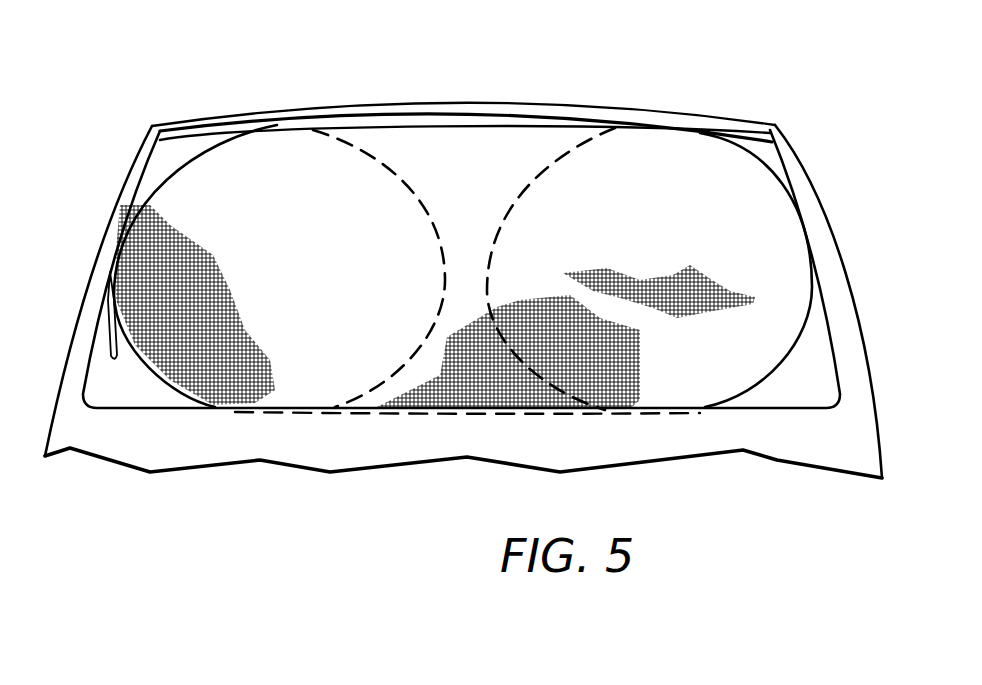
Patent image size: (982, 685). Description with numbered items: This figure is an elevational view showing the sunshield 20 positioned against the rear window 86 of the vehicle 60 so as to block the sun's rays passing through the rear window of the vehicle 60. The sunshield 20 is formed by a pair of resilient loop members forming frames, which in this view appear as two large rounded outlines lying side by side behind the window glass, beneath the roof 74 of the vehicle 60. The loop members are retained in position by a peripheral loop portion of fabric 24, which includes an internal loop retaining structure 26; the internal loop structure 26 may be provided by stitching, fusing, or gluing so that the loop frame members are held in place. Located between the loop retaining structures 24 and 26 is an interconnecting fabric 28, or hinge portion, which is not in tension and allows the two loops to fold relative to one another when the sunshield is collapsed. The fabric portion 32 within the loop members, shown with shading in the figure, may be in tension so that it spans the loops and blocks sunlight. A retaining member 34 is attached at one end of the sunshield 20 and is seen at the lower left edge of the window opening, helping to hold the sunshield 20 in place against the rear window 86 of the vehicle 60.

The sunshield 20 is at (612, 196).
The peripheral loop portion of fabric 24 is at (173, 156).
The internal loop retaining structure 26 is at (400, 165).
The interconnecting fabric 28 is at (498, 155).
The fabric portion 32 is at (706, 296).
The retaining member 34 is at (117, 362).
The vehicle 60 is at (312, 430).
The roof 74 is at (760, 132).
The rear window 86 is at (440, 123).